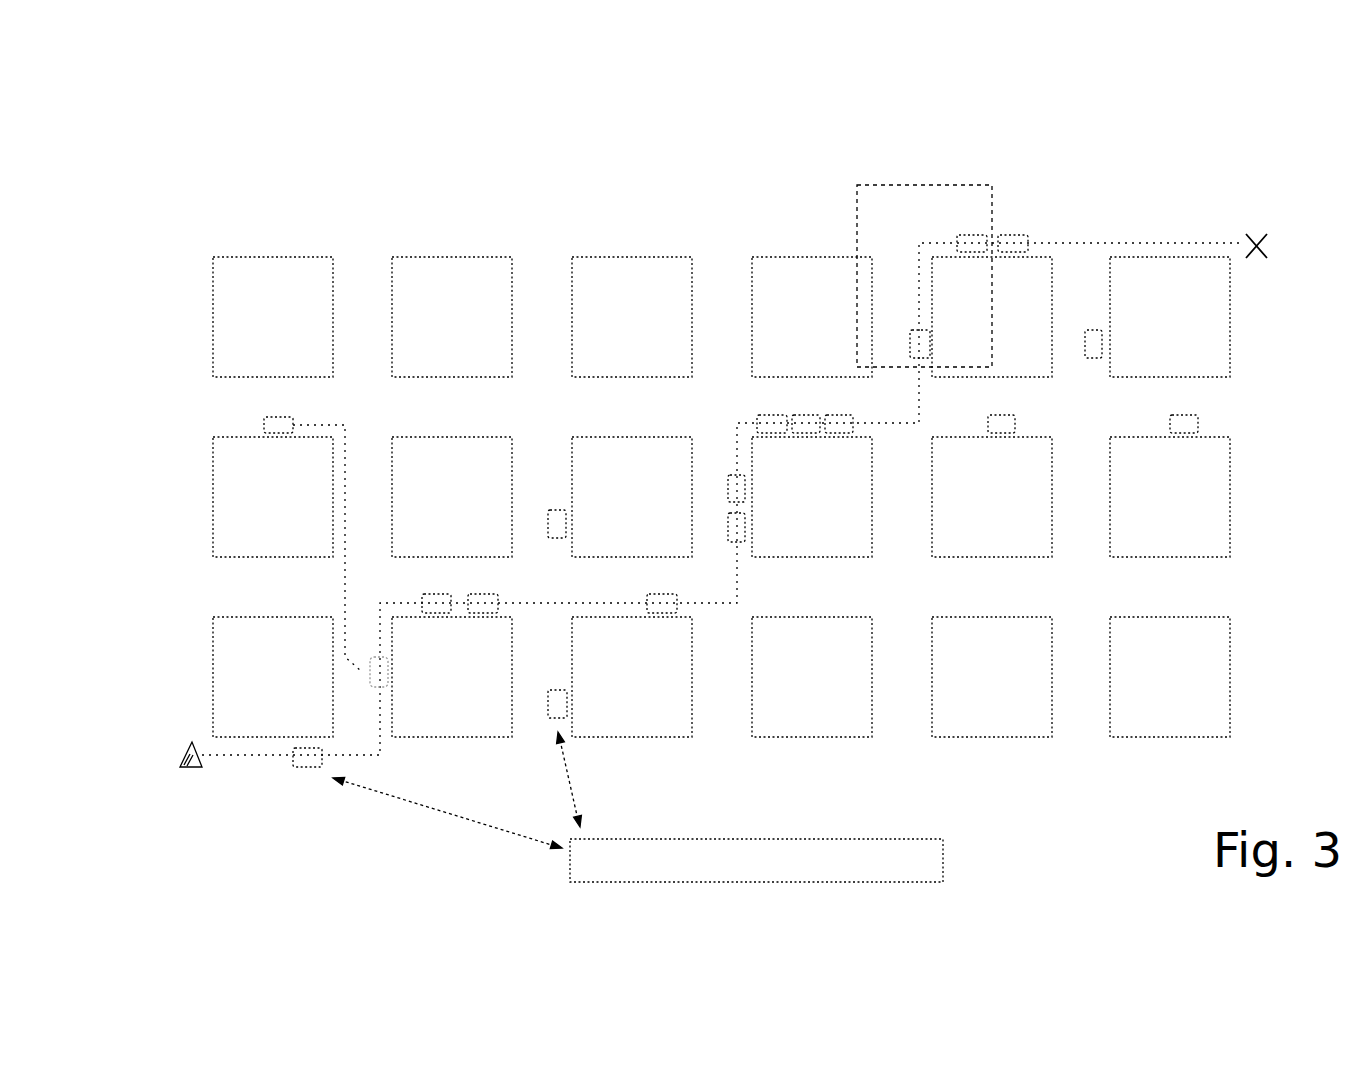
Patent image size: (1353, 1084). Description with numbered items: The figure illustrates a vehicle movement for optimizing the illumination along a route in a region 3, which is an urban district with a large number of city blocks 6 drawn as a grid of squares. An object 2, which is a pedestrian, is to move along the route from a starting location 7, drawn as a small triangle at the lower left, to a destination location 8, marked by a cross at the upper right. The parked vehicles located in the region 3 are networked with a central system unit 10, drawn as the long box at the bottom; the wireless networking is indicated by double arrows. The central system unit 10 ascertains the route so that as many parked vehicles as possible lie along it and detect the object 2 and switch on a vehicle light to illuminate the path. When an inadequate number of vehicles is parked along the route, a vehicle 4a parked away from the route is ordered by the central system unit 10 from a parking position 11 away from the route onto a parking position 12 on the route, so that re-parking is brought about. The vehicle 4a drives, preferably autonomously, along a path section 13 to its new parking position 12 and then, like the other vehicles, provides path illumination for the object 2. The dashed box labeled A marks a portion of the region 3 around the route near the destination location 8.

The city block 6 is at (273, 317).
The region 3 is at (464, 195).
The region A is at (857, 217).
The destination location 8 is at (1271, 212).
The parking position 11 is at (240, 422).
The vehicle 4a is at (278, 424).
The path section 13 is at (345, 597).
The parking position 12 is at (395, 696).
The starting location 7 is at (167, 725).
The object 2 is at (185, 755).
The central system unit 10 is at (622, 870).